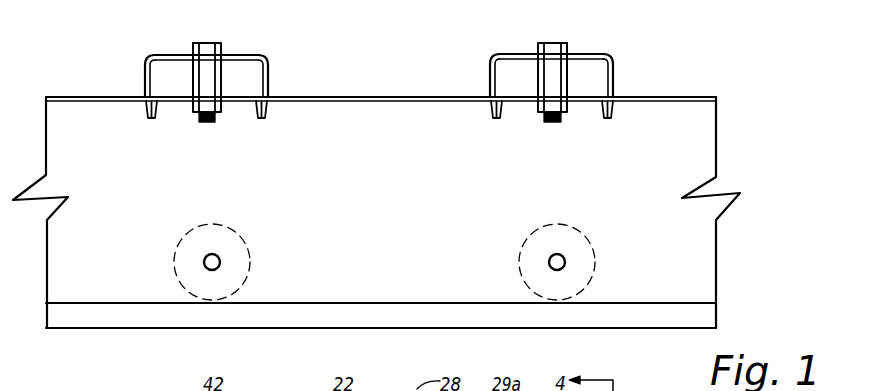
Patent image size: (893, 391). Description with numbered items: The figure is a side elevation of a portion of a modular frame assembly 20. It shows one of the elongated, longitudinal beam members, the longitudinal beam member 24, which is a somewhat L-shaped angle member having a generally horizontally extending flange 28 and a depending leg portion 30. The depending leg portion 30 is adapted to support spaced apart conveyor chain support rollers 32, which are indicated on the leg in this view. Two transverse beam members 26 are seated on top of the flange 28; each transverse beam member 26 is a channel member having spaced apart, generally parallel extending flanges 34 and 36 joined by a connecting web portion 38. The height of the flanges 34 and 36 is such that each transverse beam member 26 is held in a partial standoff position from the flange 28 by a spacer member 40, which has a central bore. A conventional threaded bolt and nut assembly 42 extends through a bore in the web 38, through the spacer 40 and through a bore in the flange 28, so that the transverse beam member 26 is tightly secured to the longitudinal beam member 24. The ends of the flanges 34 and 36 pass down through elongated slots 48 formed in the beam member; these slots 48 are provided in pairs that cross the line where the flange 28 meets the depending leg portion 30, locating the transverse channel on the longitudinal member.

The frame assembly 20 is at (425, 5).
The longitudinal beam member 24 is at (343, 282).
The transverse beam member 26 is at (210, 82).
The horizontally extending flange 28 is at (688, 95).
The depending leg portion 30 is at (397, 207).
The conveyor chain support roller 32 is at (233, 227).
The flange of transverse beam member 34 is at (270, 78).
The flange of transverse beam member 36 is at (143, 80).
The connecting web portion 38 is at (168, 55).
The spacer member 40 is at (192, 78).
The threaded bolt and nut assembly 42 is at (213, 122).
The elongated slot 48 is at (146, 114).